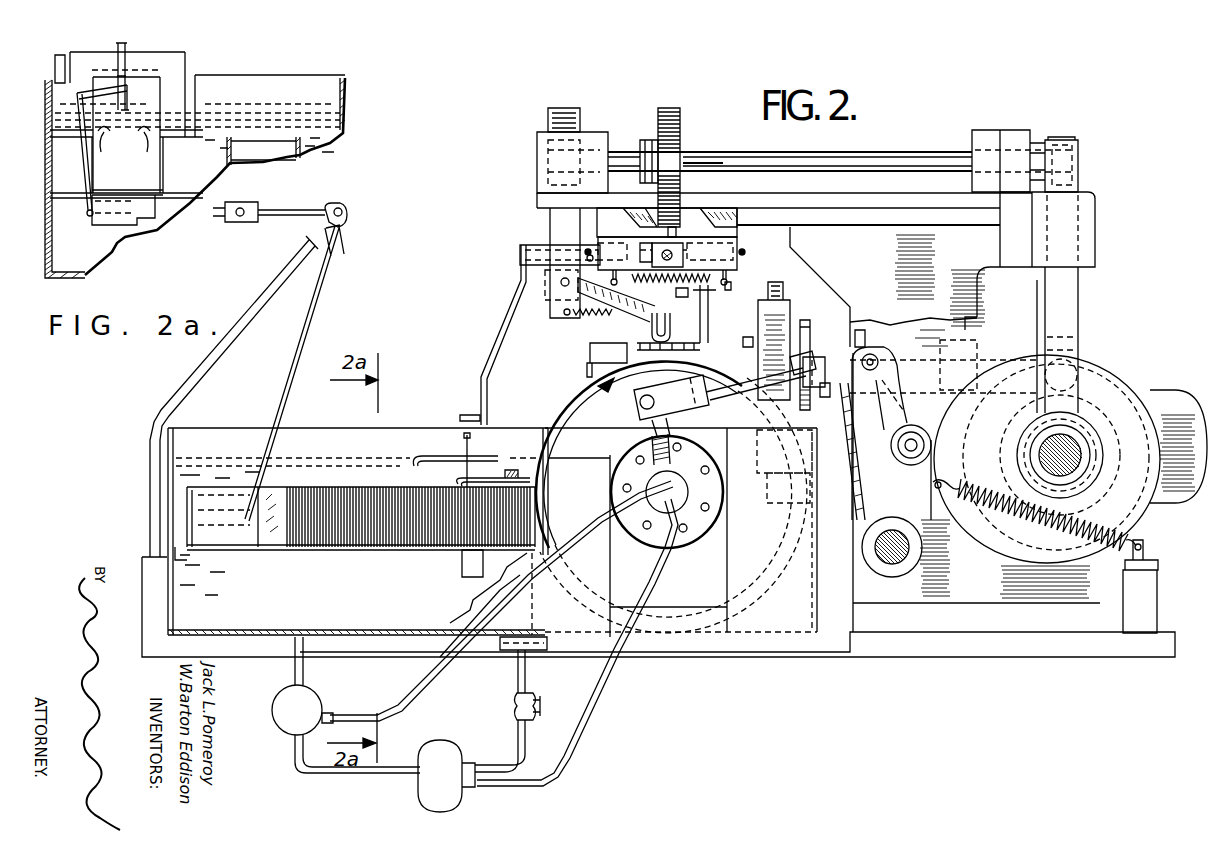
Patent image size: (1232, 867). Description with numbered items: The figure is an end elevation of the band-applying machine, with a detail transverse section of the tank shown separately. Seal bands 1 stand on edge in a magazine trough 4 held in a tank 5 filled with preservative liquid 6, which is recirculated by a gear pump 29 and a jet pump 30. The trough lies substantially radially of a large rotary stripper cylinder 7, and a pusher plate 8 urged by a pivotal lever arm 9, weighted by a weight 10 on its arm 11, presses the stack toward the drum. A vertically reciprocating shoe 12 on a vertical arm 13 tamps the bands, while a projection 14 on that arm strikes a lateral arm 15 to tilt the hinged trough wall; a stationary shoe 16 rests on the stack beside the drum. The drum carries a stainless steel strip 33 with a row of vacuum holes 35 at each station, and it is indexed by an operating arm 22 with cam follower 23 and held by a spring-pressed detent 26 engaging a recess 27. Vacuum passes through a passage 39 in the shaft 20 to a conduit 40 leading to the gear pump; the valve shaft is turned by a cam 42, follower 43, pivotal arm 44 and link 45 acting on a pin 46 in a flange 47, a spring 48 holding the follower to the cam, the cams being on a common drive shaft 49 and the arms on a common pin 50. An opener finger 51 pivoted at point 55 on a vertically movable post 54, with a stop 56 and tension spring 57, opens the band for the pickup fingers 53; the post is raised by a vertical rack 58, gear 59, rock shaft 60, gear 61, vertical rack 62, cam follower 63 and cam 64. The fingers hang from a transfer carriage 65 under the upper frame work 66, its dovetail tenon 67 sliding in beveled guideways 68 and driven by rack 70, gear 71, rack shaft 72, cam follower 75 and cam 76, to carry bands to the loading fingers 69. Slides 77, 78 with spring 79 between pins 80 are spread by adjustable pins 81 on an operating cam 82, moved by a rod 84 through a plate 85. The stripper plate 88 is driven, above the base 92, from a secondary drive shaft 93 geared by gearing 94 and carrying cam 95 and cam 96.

In FIG. 2a, the seal band 1 is at (253, 161).
In FIG. 2, the seal band 1 is at (372, 486).
In FIG. 2a, the magazine trough 4 is at (305, 144).
In FIG. 2, the magazine trough 4 is at (216, 548).
In FIG. 2a, the tank 5 is at (345, 100).
In FIG. 2, the tank 5 is at (384, 428).
In FIG. 2a, the preservative liquid 6 is at (212, 113).
In FIG. 2, the preservative liquid 6 is at (218, 456).
In FIG. 2a, the rotary stripper cylinder 7 is at (186, 73).
In FIG. 2, the rotary stripper cylinder 7 is at (552, 423).
In FIG. 2, the pusher plate 8 is at (270, 551).
In FIG. 2, the pivotal lever arm 9 is at (302, 366).
In FIG. 2a, the weight 10 is at (240, 224).
In FIG. 2a, the arm 11 is at (288, 208).
In FIG. 2a, the vertically reciprocating shoe 12 is at (134, 98).
In FIG. 2, the vertically reciprocating shoe 12 is at (424, 455).
In FIG. 2a, the vertical arm 13 is at (118, 46).
In FIG. 2, the vertical arm 13 is at (497, 338).
In FIG. 2a, the projection 14 is at (126, 64).
In FIG. 2, the projection 14 is at (467, 415).
In FIG. 2a, the lateral arm 15 is at (80, 92).
In FIG. 2, the lateral arm 15 is at (464, 435).
In FIG. 2a, the stationary shoe 16 is at (146, 137).
In FIG. 2, the stationary shoe 16 is at (490, 479).
In FIG. 2, the shaft 20 is at (673, 505).
In FIG. 2, the pivoted operating arm 22 is at (843, 430).
In FIG. 2, the cam follower 23 is at (892, 452).
In FIG. 2, the spring-pressed detent 26 is at (682, 447).
In FIG. 2, the recess 27 is at (624, 488).
In FIG. 2, the gear pump 29 is at (439, 741).
In FIG. 2, the jet pump 30 is at (311, 693).
In FIG. 2, the stainless steel strip 33 is at (639, 446).
In FIG. 2a, the vacuum holes 35 is at (165, 68).
In FIG. 2, the passage 39 is at (688, 492).
In FIG. 2, the conduit 40 is at (612, 676).
In FIG. 2, the cam 42 is at (1120, 368).
In FIG. 2, the follower 43 is at (913, 425).
In FIG. 2, the pivotal arm 44 is at (896, 386).
In FIG. 2, the link 45 is at (726, 385).
In FIG. 2, the pin 46 is at (650, 436).
In FIG. 2, the flange 47 is at (706, 523).
In FIG. 2, the spring 48 is at (1028, 530).
In FIG. 2, the drive shaft 49 is at (1068, 448).
In FIG. 2, the common pin 50 is at (900, 558).
In FIG. 2, the opener finger 51 is at (632, 315).
In FIG. 2, the pickup and transfer fingers 53 is at (709, 298).
In FIG. 2, the vertically movable post 54 is at (549, 220).
In FIG. 2, the pivot point 55 is at (562, 284).
In FIG. 2, the stop 56 is at (691, 296).
In FIG. 2, the tension spring 57 is at (575, 317).
In FIG. 2, the vertical rack 58 is at (548, 118).
In FIG. 2, the gear 59 is at (550, 150).
In FIG. 2, the horizontal rock shaft 60 is at (620, 151).
In FIG. 2, the gear 61 is at (1064, 138).
In FIG. 2, the vertical rack 62 is at (1079, 181).
In FIG. 2, the cam follower 63 is at (1081, 346).
In FIG. 2, the cam 64 is at (1013, 402).
In FIG. 2, the transfer carriage 65 is at (689, 247).
In FIG. 2, the upper frame work 66 is at (537, 199).
In FIG. 2, the dovetail tenon 67 is at (638, 219).
In FIG. 2, the beveled guideways 68 is at (665, 207).
In FIG. 2, the loading fingers 69 is at (600, 369).
In FIG. 2, the rack 70 is at (680, 211).
In FIG. 2, the gear 71 is at (681, 115).
In FIG. 2, the horizontal rack shaft 72 is at (686, 152).
In FIG. 2, the cam follower 75 is at (1003, 462).
In FIG. 2, the cam 76 is at (1167, 502).
In FIG. 2, the transverse slide 77 is at (560, 254).
In FIG. 2, the transverse slide 78 is at (732, 284).
In FIG. 2, the tension spring 79 is at (670, 283).
In FIG. 2, the pins 80 is at (590, 262).
In FIG. 2, the adjustable pin 81 is at (746, 254).
In FIG. 2, the operating cam 82 is at (659, 247).
In FIG. 2, the rod 84 is at (669, 252).
In FIG. 2, the plate 85 is at (735, 214).
In FIG. 2, the stripper plate 88 is at (692, 313).
In FIG. 2, the base 92 is at (823, 658).
In FIG. 2, the secondary drive shaft 93 is at (912, 345).
In FIG. 2, the gearing 94 is at (1086, 372).
In FIG. 2, the cam 95 is at (857, 330).
In FIG. 2, the cam 96 is at (804, 320).